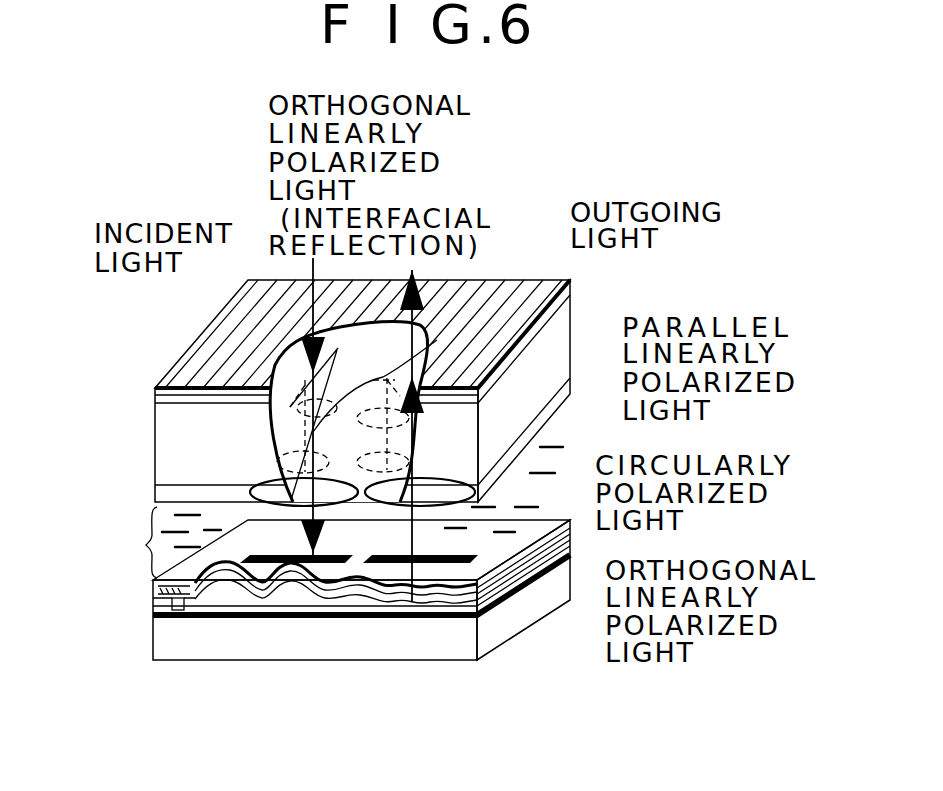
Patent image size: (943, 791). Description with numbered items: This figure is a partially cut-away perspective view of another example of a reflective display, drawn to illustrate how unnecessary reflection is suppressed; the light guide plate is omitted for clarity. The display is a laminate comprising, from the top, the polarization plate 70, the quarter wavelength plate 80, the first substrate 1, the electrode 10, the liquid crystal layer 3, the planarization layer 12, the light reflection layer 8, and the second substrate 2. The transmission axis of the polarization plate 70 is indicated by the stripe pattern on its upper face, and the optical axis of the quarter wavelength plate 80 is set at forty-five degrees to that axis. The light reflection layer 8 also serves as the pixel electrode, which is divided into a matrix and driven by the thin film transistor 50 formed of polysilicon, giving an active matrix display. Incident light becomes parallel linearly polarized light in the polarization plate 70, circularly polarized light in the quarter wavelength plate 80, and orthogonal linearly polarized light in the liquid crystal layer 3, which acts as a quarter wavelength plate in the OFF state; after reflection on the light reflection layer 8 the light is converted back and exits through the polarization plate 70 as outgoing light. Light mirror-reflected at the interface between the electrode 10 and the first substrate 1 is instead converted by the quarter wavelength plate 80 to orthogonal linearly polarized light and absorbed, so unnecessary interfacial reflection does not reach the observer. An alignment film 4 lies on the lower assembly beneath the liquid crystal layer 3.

The polarization plate 70 is at (185, 360).
The quarter wavelength plate 80 is at (155, 399).
The first substrate 1 is at (155, 445).
The electrode 10 is at (155, 493).
The liquid crystal layer 3 is at (146, 545).
The alignment film 4 is at (175, 537).
The thin film transistor 50 is at (217, 632).
The light reflection layer 8 is at (418, 602).
The planarization layer 12 is at (537, 530).
The second substrate 2 is at (520, 622).